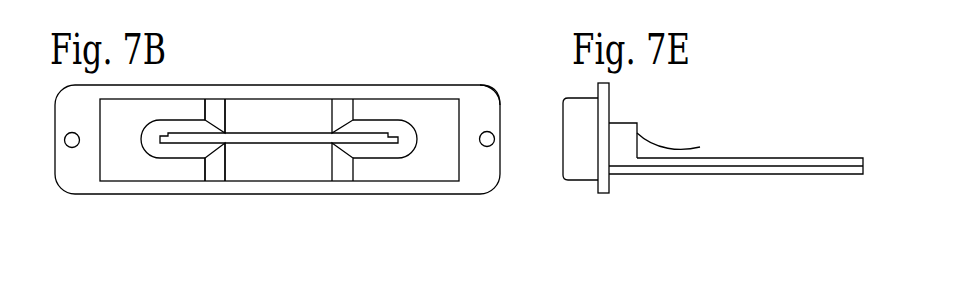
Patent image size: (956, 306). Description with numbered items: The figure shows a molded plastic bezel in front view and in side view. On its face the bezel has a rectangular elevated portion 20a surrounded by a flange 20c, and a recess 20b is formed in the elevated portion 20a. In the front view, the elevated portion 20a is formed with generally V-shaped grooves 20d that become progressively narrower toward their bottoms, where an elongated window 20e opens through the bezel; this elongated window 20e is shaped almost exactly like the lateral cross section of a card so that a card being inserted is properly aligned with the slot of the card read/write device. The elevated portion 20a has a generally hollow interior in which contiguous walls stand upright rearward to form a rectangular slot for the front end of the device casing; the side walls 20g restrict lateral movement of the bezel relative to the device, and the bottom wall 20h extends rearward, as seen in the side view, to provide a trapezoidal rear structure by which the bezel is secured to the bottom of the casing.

In FIG. 7B, the elevated portion 20a is at (460, 182).
In FIG. 7E, the elevated portion 20a is at (565, 180).
In FIG. 7B, the recess 20b is at (217, 168).
In FIG. 7B, the flange 20c is at (493, 93).
In FIG. 7E, the flange 20c is at (602, 193).
In FIG. 7B, the V-shaped grooves 20d is at (185, 153).
In FIG. 7B, the elongated window 20e is at (322, 133).
In FIG. 7E, the side walls 20g is at (700, 147).
In FIG. 7E, the bottom wall 20h is at (800, 157).